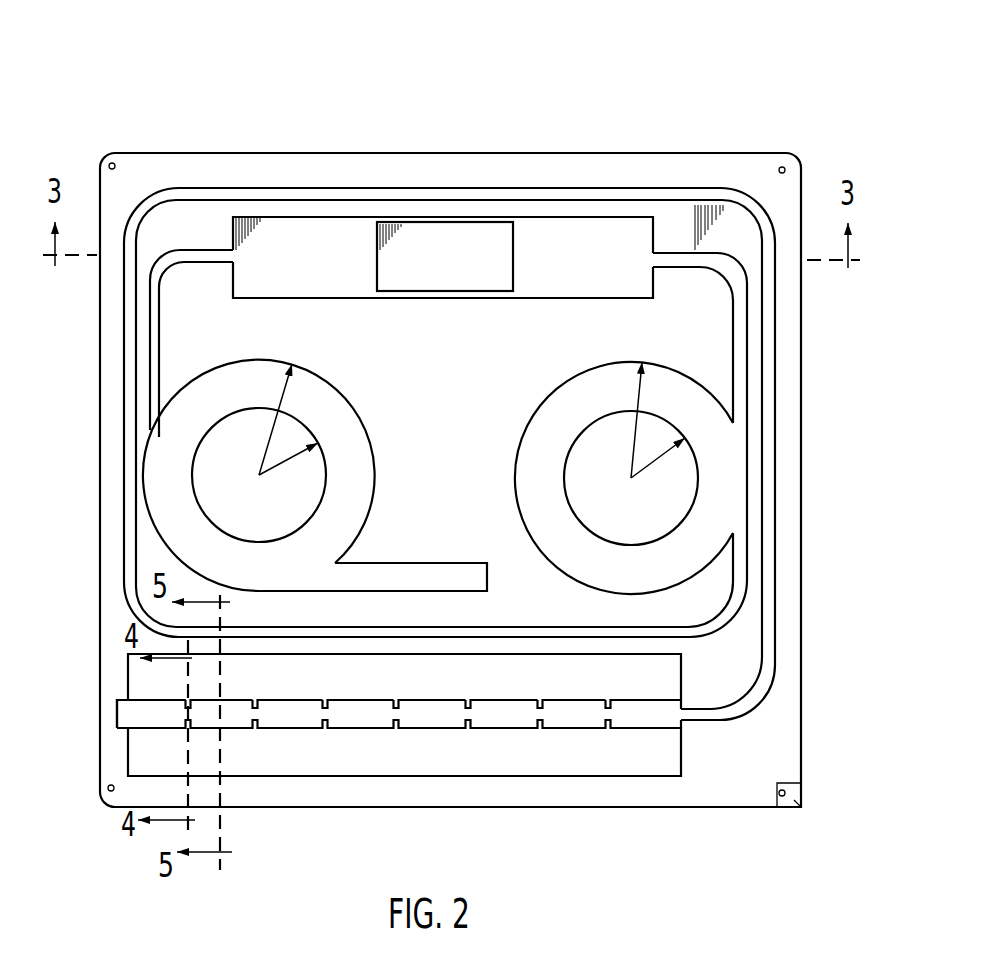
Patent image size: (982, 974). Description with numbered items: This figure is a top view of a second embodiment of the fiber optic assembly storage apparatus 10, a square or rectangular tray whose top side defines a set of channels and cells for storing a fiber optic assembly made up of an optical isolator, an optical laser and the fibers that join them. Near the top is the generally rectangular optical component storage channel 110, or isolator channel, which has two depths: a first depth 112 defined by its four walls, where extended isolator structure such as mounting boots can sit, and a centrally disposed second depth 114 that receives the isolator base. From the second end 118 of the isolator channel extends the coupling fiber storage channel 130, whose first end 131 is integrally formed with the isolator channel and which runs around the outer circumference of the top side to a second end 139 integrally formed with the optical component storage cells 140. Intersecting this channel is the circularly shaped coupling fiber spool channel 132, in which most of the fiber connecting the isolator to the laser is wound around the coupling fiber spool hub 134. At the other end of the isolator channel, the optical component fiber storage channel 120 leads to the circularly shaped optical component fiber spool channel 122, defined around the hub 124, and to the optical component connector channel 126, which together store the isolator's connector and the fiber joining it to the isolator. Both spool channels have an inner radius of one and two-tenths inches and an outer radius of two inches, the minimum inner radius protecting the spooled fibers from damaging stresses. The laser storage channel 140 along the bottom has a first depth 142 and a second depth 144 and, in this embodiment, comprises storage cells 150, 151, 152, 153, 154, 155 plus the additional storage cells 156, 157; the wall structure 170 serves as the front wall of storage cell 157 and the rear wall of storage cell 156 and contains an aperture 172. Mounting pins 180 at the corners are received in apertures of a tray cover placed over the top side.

The fiber optic assembly storage apparatus 10 is at (399, 86).
The optical component storage channel 110 is at (313, 226).
The first depth 112 is at (542, 243).
The second depth 114 is at (426, 250).
The second end 118 is at (666, 247).
The optical component fiber storage channel 120 is at (160, 318).
The optical component fiber spool channel 122 is at (352, 421).
The hub 124 is at (247, 467).
The optical component connector channel 126 is at (440, 562).
The coupling fiber storage channel 130 is at (771, 356).
The first end 131 is at (694, 270).
The coupling fiber spool channel 132 is at (554, 400).
The coupling fiber spool hub 134 is at (617, 500).
The second end 139 is at (706, 713).
The optical component storage cells 140 is at (520, 786).
The first depth 142 is at (624, 754).
The second depth 144 is at (440, 722).
The storage cell 150 is at (642, 710).
The storage cell 151 is at (580, 710).
The storage cell 152 is at (508, 710).
The storage cell 153 is at (434, 710).
The storage cell 154 is at (359, 710).
The storage cell 155 is at (283, 710).
The storage cell 156 is at (228, 722).
The storage cell 157 is at (117, 702).
The wall structure 170 is at (186, 722).
The aperture 172 is at (174, 708).
The mounting pins 180 is at (116, 163).